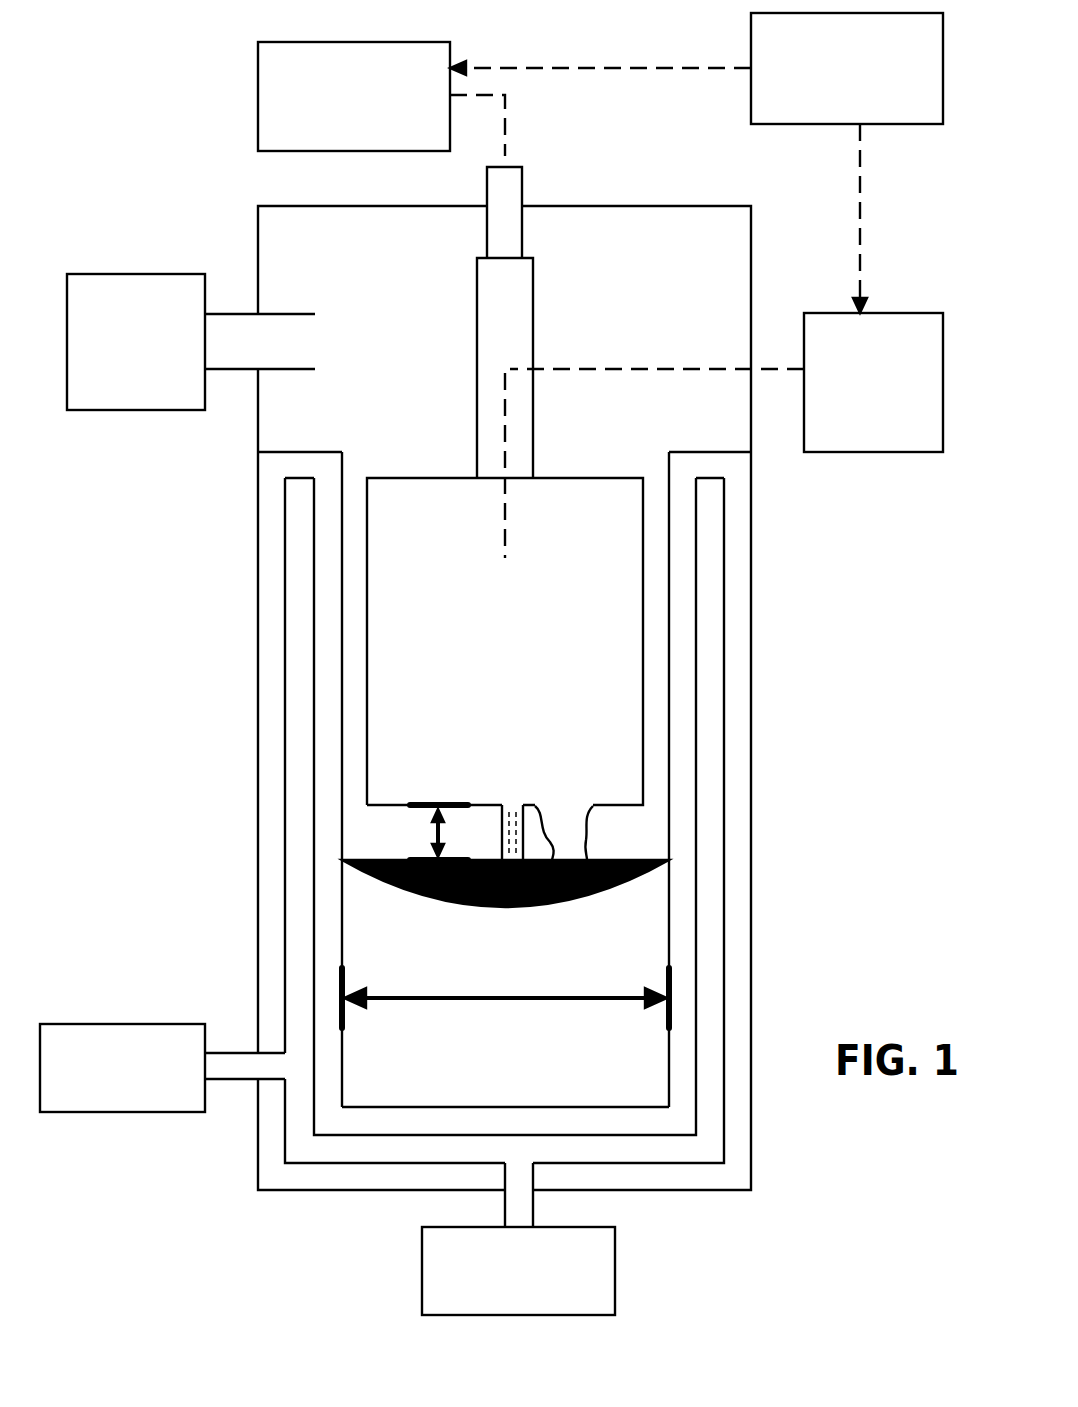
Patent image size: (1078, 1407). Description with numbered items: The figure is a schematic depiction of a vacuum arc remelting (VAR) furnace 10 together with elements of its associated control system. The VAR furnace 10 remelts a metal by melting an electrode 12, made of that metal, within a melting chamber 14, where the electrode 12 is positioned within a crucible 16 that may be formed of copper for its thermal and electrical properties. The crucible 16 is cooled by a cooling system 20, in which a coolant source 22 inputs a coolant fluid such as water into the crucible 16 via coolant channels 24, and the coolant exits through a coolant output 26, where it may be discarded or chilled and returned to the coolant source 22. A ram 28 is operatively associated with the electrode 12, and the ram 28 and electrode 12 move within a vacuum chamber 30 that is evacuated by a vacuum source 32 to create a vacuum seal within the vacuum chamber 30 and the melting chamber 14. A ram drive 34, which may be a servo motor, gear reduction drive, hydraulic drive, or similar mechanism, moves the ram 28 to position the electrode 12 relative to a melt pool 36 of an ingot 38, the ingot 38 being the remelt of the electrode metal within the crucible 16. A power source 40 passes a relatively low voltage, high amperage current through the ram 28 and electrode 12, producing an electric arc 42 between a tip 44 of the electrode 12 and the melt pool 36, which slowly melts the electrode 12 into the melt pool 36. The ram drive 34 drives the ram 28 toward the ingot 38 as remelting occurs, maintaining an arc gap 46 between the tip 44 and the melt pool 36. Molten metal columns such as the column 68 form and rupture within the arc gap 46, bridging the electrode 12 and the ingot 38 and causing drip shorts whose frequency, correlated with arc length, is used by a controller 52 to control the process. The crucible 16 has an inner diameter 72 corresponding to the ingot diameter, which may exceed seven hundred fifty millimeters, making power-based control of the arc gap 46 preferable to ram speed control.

The vacuum arc remelting (VAR) furnace 10 is at (243, 220).
The electrode 12 is at (643, 632).
The melting chamber 14 is at (366, 449).
The crucible 16 is at (678, 1040).
The cooling system 20 is at (532, 1162).
The coolant source 22 is at (518, 1271).
The coolant channels 24 is at (709, 1126).
The coolant output 26 is at (162, 1068).
The ram 28 is at (523, 225).
The vacuum chamber 30 is at (425, 240).
The vacuum source 32 is at (191, 342).
The ram drive 34 is at (381, 99).
The melt pool 36 is at (375, 878).
The ingot 38 is at (633, 935).
The power source 40 is at (724, 435).
The electric arc 42 is at (500, 824).
The tip 44 is at (395, 809).
The arc gap 46 is at (447, 826).
The controller 52 is at (696, 163).
The column 68 is at (587, 829).
The inner diameter 72 is at (465, 1000).